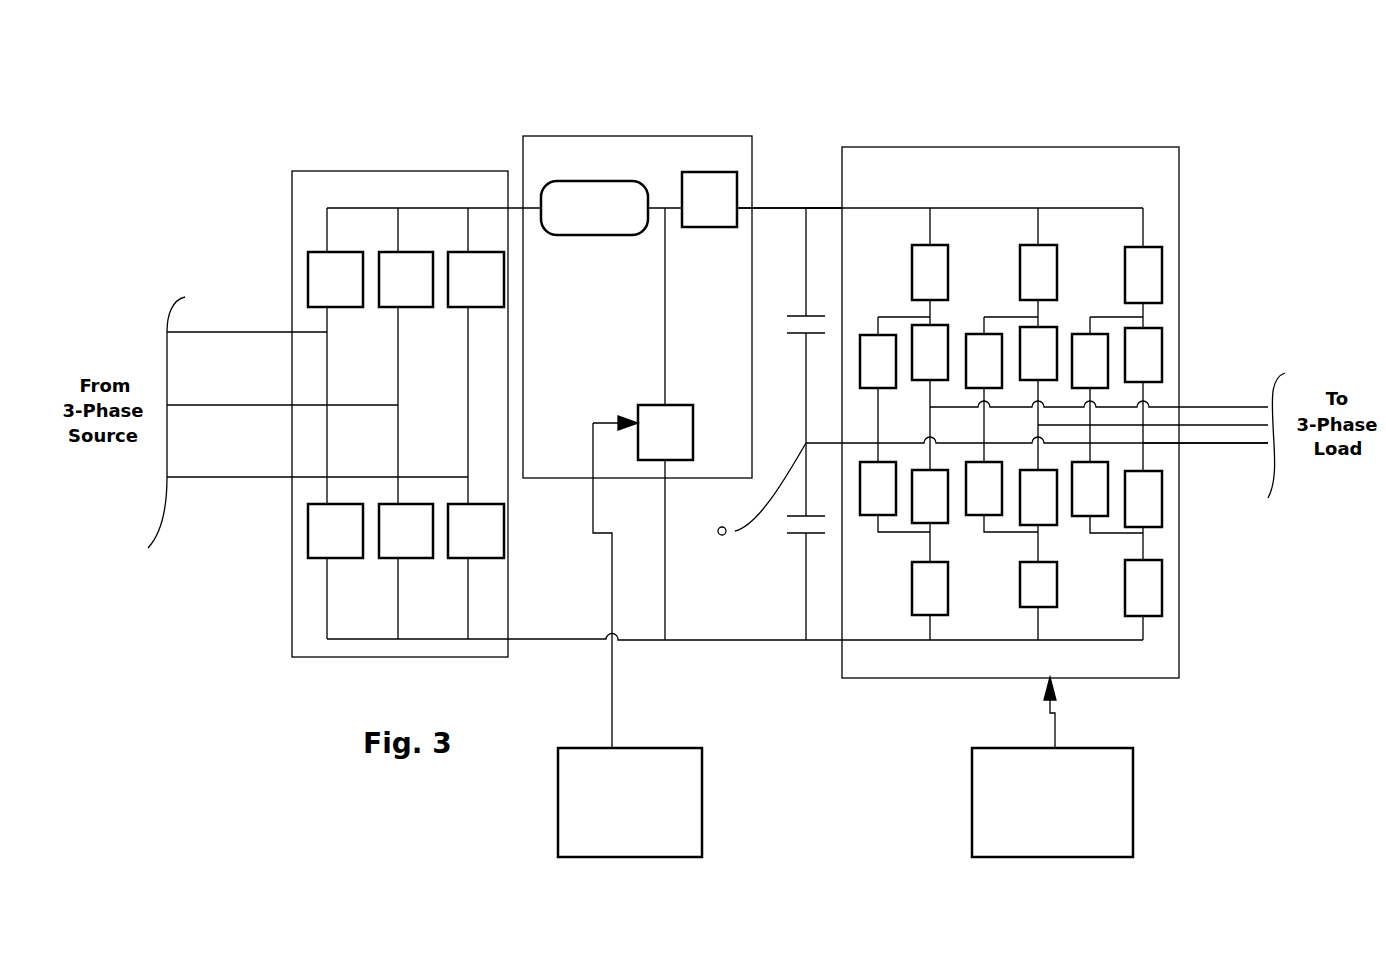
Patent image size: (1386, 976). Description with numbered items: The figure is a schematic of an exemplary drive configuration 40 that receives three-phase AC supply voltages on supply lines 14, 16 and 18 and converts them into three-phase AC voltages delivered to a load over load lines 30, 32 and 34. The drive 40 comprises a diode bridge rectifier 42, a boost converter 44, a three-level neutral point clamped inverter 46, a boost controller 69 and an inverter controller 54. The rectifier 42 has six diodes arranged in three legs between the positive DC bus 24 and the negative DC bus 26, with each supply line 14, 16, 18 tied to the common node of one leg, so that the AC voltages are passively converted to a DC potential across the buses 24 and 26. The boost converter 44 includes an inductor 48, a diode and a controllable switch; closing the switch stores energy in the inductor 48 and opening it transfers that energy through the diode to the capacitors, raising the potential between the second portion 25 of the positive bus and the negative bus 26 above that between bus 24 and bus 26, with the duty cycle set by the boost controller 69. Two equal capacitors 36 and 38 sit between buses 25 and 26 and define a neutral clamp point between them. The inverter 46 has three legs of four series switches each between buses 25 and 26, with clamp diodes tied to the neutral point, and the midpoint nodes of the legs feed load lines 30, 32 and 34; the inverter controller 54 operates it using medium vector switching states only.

The drive configuration 40 is at (218, 190).
The diode bridge rectifier 42 is at (312, 171).
The supply line 14 is at (222, 332).
The supply line 16 is at (242, 407).
The supply line 18 is at (255, 478).
The positive DC bus 24 is at (487, 207).
The negative DC bus 26 is at (540, 642).
The boost converter 44 is at (637, 407).
The inductor 48 is at (572, 181).
The second portion of positive bus 25 is at (772, 207).
The capacitor 36 is at (808, 312).
The capacitor 38 is at (805, 537).
The three-level inverter 46 is at (1115, 147).
The first load line 30 is at (1233, 407).
The load line 32 is at (1252, 424).
The load line 34 is at (1198, 445).
The inverter controller 54 is at (972, 773).
The boost controller 69 is at (557, 807).